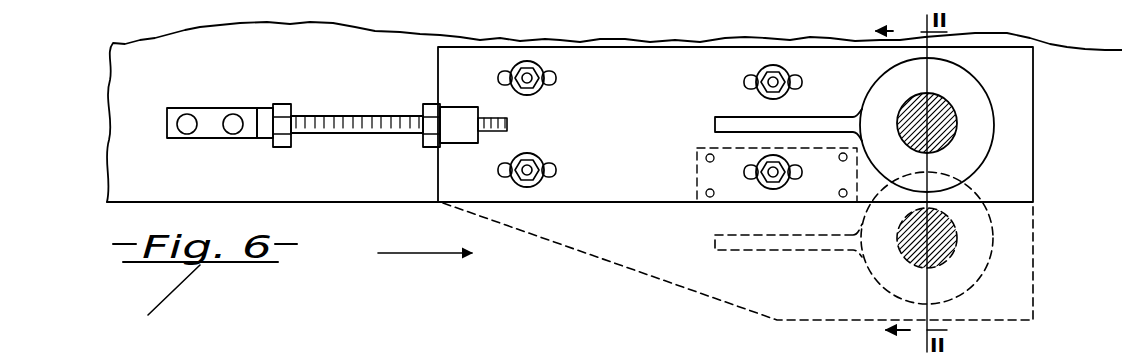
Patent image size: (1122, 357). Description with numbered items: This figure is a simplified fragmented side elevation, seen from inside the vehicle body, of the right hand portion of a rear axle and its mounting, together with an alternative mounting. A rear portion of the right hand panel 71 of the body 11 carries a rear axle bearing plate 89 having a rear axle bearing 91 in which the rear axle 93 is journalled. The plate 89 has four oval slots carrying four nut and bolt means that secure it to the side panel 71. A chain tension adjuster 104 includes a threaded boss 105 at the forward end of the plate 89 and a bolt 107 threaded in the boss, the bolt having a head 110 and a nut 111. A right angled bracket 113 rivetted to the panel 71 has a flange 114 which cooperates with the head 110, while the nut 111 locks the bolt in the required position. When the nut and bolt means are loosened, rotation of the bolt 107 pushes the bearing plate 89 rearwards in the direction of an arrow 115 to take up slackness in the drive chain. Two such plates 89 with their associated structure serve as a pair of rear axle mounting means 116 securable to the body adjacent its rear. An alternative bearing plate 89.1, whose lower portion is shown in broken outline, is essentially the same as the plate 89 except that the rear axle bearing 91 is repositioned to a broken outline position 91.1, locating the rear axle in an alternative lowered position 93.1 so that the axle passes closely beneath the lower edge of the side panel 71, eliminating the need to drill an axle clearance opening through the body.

The body 11 is at (1068, 43).
The right hand panel 71 is at (1112, 125).
The rear axle bearing plate 89 is at (570, 168).
The alternative rear axle bearing plate 89.1 is at (742, 246).
The rear axle bearing 91 is at (953, 107).
The broken outline position of rear axle bearing 91.1 is at (990, 272).
The rear axle 93 is at (943, 134).
The alternative lowered position of rear axle 93.1 is at (957, 228).
The chain tension adjuster 104 is at (303, 93).
The threaded boss 105 is at (455, 120).
The bolt 107 is at (300, 133).
The head 110 is at (282, 137).
The nut 111 is at (433, 143).
The right angled bracket 113 is at (202, 115).
The flange 114 is at (263, 117).
The arrow 115 is at (410, 254).
The rear axle mounting means 116 is at (557, 246).